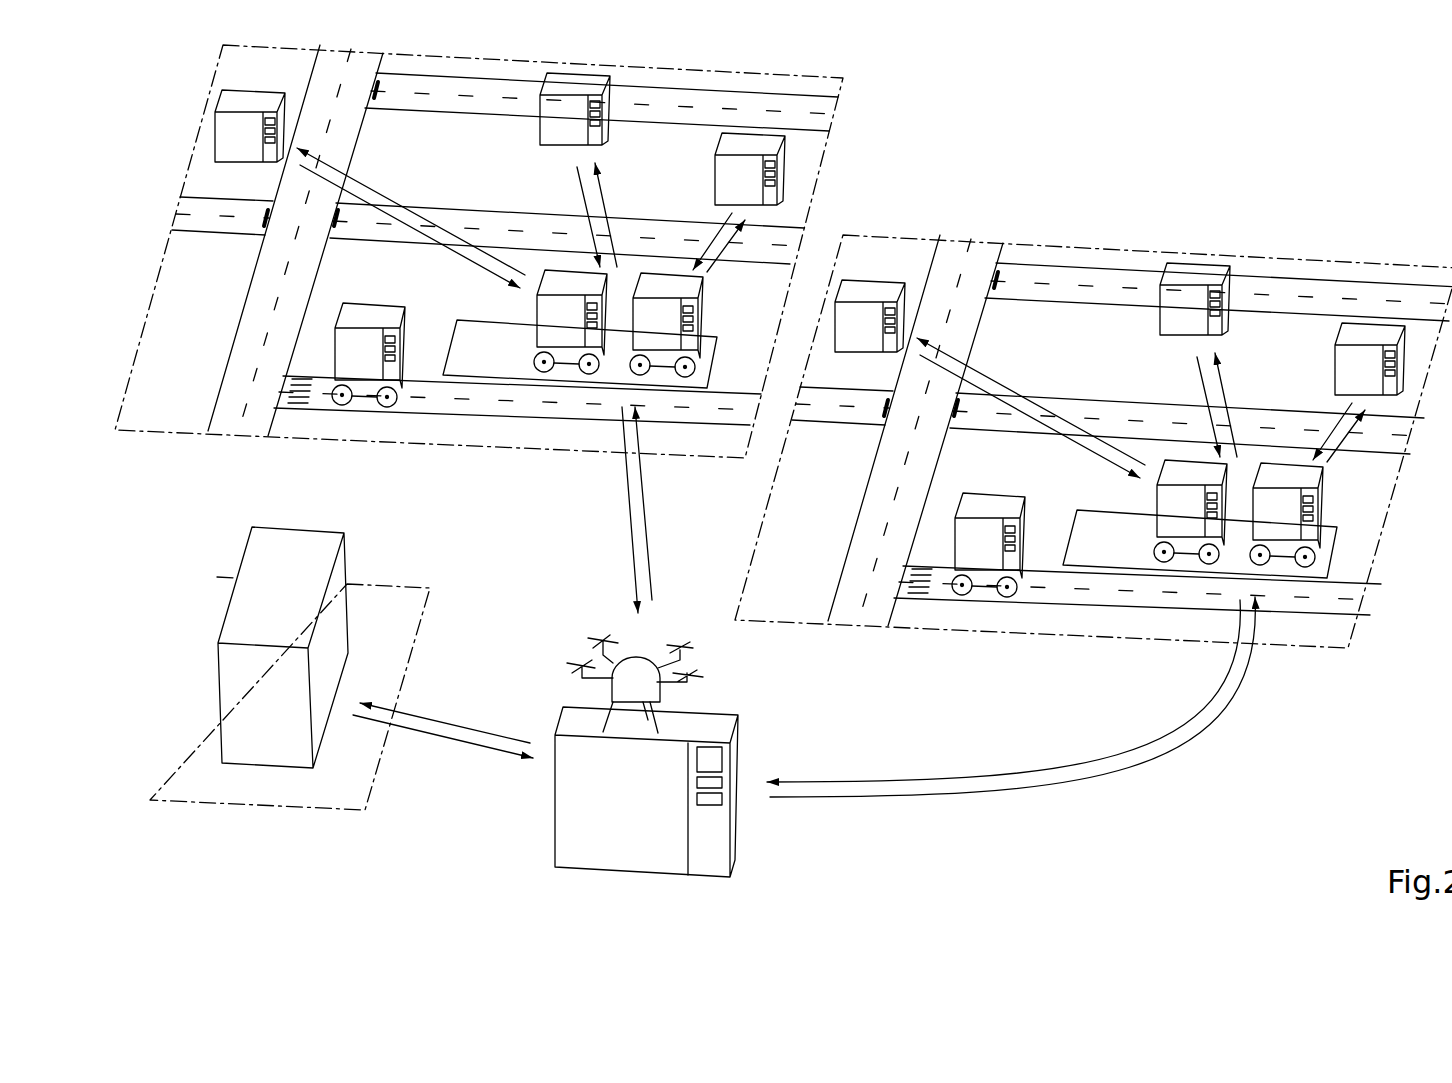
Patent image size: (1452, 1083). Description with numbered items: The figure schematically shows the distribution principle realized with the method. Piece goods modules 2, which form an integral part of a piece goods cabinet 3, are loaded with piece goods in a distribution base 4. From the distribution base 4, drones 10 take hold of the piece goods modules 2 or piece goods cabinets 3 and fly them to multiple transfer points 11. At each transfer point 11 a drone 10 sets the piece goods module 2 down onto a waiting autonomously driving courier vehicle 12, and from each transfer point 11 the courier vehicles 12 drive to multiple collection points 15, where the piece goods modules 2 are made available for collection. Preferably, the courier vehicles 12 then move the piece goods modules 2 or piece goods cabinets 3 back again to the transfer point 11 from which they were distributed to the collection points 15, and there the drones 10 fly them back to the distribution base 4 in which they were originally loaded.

The piece goods module 2 is at (575, 830).
The piece goods cabinet 3 is at (713, 838).
The distribution base 4 is at (269, 743).
The drone 10 is at (627, 690).
The transfer point 11 is at (508, 368).
The courier vehicle 12 is at (367, 396).
The collection point 15 is at (240, 168).